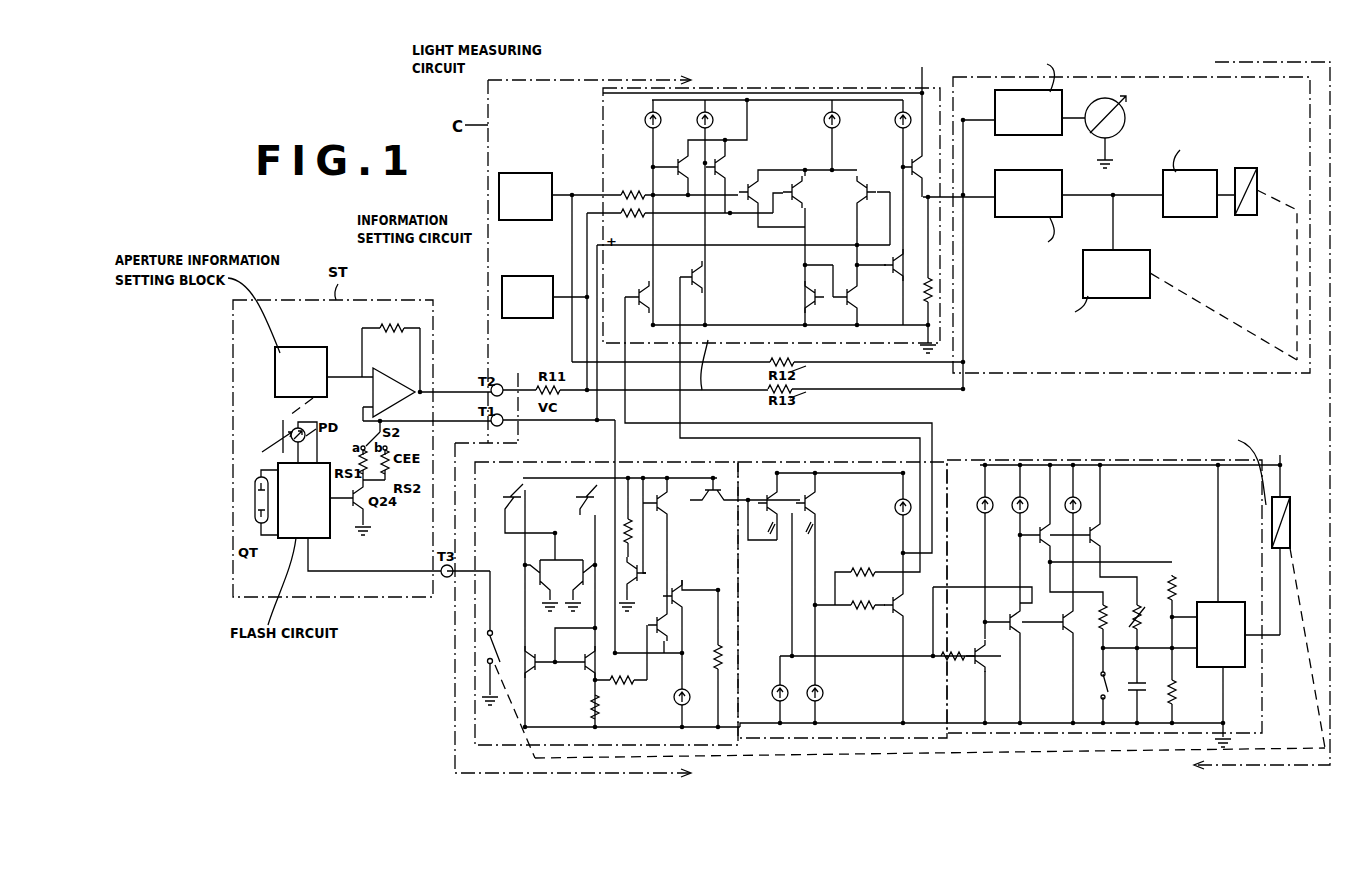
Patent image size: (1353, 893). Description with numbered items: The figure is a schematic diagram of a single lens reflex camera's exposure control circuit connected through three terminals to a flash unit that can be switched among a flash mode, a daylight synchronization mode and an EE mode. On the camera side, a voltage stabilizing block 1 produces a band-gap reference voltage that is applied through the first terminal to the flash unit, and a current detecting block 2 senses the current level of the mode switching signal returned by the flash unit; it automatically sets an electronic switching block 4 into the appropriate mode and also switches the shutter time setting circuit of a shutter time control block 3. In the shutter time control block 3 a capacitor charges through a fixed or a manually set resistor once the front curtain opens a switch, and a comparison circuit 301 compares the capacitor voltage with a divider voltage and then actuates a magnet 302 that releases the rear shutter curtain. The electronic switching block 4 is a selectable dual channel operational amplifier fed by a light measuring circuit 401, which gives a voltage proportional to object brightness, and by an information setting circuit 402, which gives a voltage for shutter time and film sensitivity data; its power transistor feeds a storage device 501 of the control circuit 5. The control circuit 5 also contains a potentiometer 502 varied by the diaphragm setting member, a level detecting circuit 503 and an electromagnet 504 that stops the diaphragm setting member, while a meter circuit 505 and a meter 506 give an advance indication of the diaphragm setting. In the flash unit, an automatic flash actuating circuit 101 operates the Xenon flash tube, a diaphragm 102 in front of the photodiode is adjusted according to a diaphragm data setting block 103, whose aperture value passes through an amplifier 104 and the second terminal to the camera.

The voltage stabilizing block 1 is at (716, 775).
The current detecting block 2 is at (844, 770).
The shutter time control block 3 is at (930, 599).
The electronic switching block 4 is at (708, 411).
The control circuit 5 is at (1131, 336).
The automatic flash actuating circuit 101 is at (304, 500).
The diaphragm 102 is at (282, 427).
The diaphragm data setting block 103 is at (301, 372).
The amplifier 104 is at (388, 372).
The comparison circuit 301 is at (1221, 634).
The magnet 302 is at (1293, 482).
The light measuring circuit 401 is at (470, 64).
The information setting circuit 402 is at (460, 255).
The storage device 501 is at (1028, 193).
The potentiometer 502 is at (1116, 274).
The level detecting circuit 503 is at (1190, 193).
The electromagnet 504 is at (1246, 218).
The meter circuit 505 is at (1028, 112).
The meter 506 is at (1127, 118).